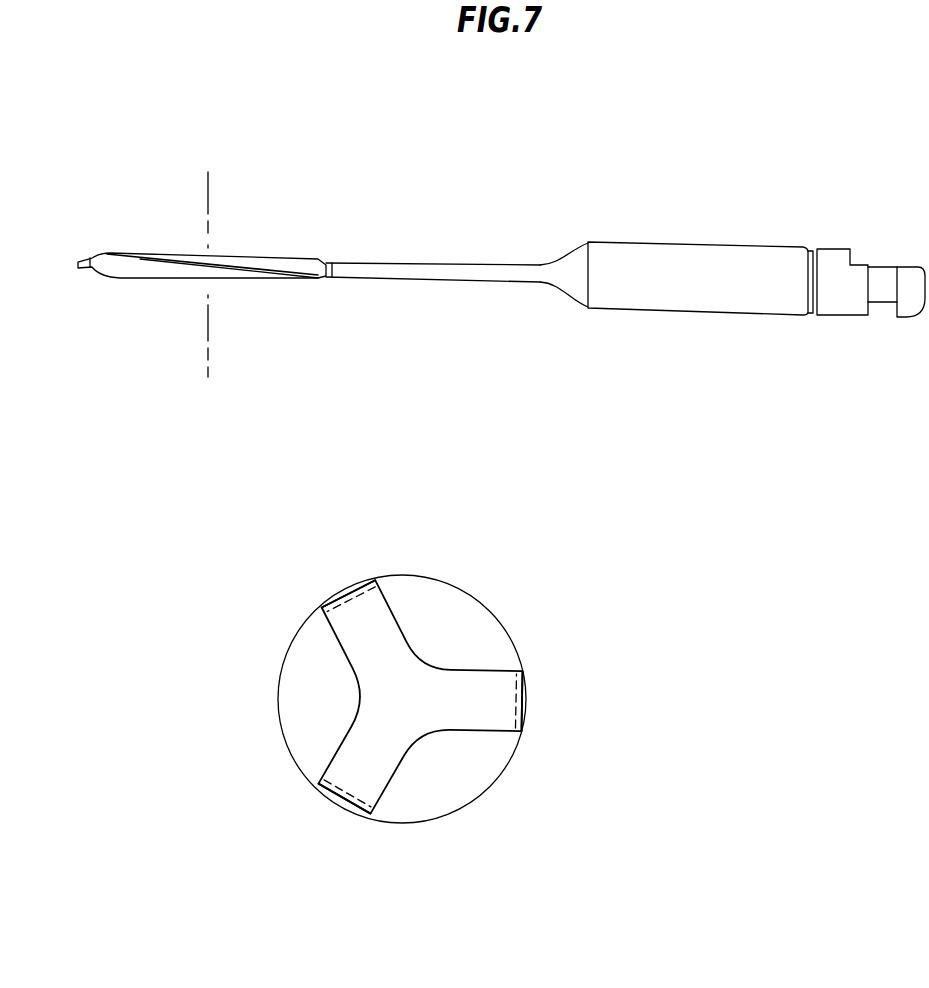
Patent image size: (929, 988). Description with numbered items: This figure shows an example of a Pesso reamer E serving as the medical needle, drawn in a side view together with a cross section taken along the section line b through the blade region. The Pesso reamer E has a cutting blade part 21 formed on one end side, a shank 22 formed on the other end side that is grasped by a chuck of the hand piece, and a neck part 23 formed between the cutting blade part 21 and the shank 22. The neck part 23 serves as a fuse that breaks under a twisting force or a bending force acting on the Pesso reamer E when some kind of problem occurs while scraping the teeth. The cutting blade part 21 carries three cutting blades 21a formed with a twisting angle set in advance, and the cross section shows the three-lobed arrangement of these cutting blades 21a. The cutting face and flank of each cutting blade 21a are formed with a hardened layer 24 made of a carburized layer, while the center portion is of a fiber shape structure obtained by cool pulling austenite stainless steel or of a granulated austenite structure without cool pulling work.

The cutting blade part 21 is at (116, 250).
The cutting blades 21a is at (276, 262).
The shank 22 is at (716, 243).
The neck part 23 is at (420, 282).
The hardened layer 24 is at (337, 597).
The Pesso reamer E is at (403, 211).
The section line b- b is at (208, 275).